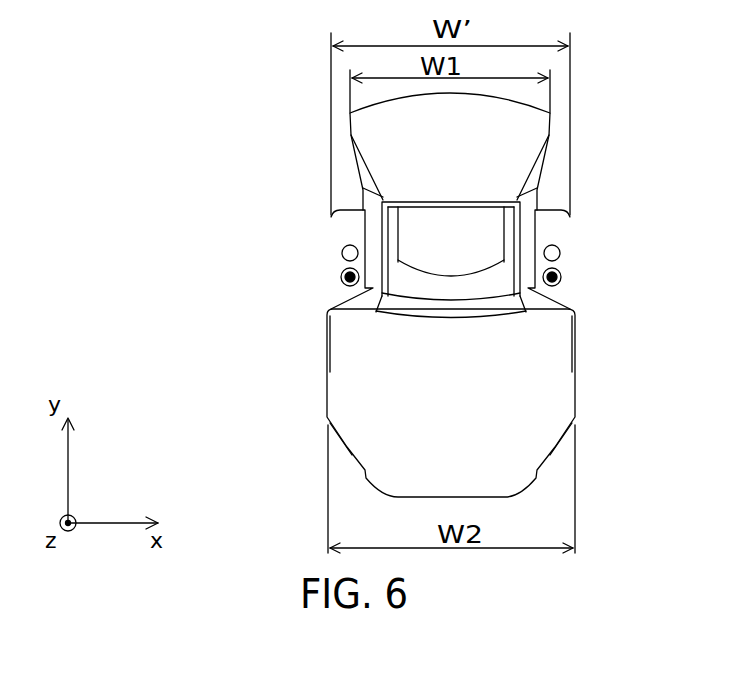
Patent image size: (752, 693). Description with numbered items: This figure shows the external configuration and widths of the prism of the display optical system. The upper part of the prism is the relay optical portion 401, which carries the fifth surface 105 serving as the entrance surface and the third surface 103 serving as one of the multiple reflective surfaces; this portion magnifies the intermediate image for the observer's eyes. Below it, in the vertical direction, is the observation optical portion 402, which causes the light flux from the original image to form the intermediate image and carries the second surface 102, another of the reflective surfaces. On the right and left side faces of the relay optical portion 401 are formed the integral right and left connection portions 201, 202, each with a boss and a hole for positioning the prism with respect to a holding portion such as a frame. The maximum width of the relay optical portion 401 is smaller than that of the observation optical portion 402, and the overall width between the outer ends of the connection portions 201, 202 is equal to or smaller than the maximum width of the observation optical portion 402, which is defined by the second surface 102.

The second surface 102 is at (473, 437).
The third surface 103 is at (492, 155).
The fifth surface 105 is at (473, 261).
The right connection portion 201 is at (338, 260).
The left connection portion 202 is at (553, 226).
The relay optical portion 401 is at (307, 312).
The observation optical portion 402 is at (307, 322).